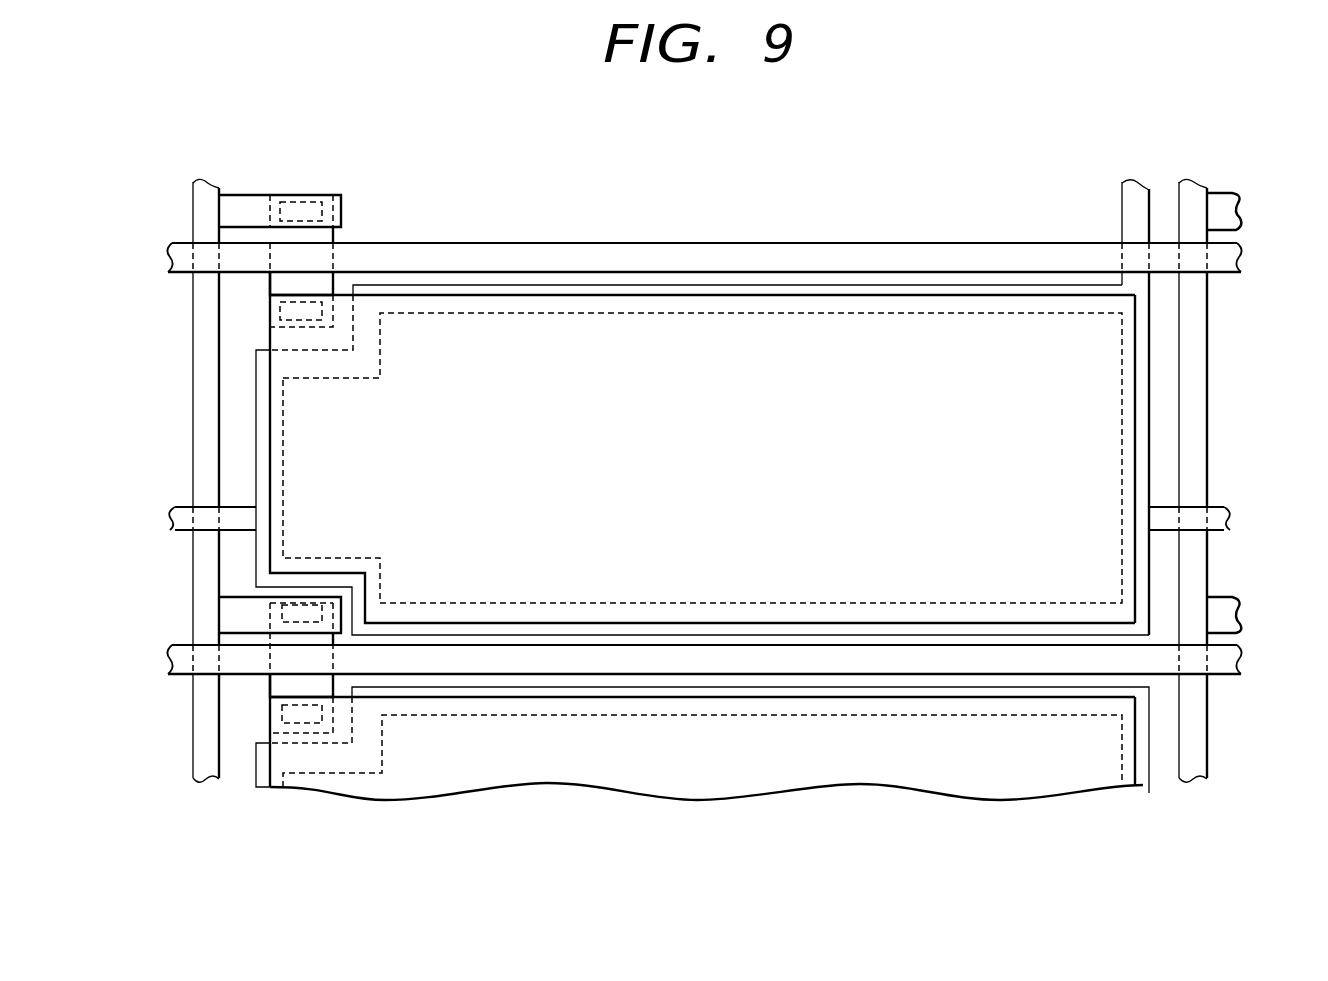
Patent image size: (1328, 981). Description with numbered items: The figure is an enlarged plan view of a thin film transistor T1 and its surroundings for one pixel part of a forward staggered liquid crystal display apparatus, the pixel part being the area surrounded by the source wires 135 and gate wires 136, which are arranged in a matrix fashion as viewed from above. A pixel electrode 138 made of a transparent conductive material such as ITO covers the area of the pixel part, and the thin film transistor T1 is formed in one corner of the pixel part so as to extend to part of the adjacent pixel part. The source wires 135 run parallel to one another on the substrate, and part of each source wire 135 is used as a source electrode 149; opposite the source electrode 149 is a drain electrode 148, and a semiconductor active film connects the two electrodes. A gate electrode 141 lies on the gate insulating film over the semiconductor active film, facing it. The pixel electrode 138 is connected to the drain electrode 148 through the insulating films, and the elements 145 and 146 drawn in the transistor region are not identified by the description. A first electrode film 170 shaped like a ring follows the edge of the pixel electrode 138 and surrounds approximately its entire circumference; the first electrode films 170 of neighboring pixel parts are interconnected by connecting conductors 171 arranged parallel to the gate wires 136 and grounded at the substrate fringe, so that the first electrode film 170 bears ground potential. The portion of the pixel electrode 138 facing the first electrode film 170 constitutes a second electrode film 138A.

The source wire 135 is at (202, 217).
The gate wire 136 is at (587, 258).
The pixel electrode 138 is at (815, 333).
The second electrode film 138A is at (670, 300).
The gate electrode 141 is at (317, 258).
The semiconductor layer 145 is at (290, 313).
The contact hole 146 is at (312, 194).
The drain electrode 148 is at (300, 323).
The source electrode 149 is at (284, 193).
The first electrode film 170 is at (492, 290).
The connecting conductor 171 is at (172, 520).
The thin film transistor T1 is at (248, 288).